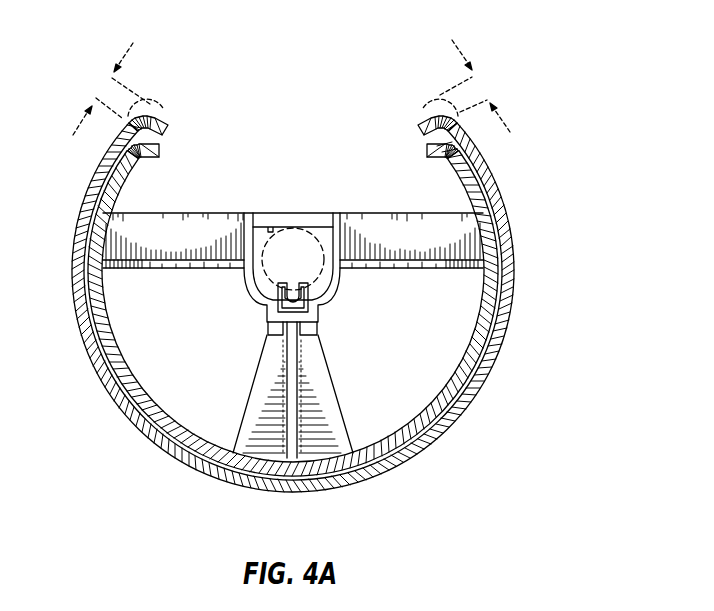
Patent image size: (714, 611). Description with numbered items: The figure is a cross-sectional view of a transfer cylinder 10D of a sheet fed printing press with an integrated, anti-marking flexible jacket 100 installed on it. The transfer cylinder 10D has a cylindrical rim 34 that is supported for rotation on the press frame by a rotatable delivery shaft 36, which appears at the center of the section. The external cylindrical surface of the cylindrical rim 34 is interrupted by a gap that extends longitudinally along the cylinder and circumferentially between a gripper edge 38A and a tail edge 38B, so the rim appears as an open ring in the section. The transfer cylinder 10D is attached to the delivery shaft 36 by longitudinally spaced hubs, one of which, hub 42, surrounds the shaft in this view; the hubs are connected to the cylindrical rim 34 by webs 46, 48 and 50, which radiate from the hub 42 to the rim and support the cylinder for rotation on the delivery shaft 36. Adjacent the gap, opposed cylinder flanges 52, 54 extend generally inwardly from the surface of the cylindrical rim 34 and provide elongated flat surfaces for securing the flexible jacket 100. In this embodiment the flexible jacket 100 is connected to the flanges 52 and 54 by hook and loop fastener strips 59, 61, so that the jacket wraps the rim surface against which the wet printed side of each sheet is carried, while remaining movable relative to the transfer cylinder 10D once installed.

The transfer cylinder 10D is at (326, 60).
The flexible jacket 100 is at (520, 208).
The cylindrical rim 34 is at (130, 386).
The delivery shaft 36 is at (303, 228).
The gripper edge 38A is at (117, 133).
The tail edge 38B is at (478, 136).
The hub 42 is at (323, 297).
The web 46 is at (165, 246).
The web 48 is at (410, 248).
The web 50 is at (302, 380).
The cylinder flange 52 is at (165, 150).
The cylinder flange 54 is at (420, 153).
The hook and loop fastener strip 59 is at (173, 137).
The hook and loop fastener strip 61 is at (425, 143).